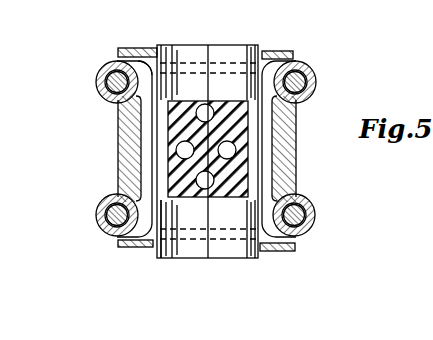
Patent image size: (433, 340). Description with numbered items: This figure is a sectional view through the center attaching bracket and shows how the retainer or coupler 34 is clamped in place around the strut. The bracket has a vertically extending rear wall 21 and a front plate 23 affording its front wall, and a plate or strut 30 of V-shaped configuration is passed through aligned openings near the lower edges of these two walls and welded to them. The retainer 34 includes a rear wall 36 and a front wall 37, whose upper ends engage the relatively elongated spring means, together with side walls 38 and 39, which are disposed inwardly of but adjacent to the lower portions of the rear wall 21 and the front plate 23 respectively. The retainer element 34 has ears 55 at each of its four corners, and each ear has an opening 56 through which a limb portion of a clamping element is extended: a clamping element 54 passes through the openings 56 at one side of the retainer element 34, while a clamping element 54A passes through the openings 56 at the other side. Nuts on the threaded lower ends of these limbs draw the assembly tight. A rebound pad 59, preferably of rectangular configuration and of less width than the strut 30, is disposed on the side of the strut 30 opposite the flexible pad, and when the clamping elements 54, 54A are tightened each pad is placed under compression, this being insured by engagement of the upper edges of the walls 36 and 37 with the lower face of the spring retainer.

The rear wall 21 is at (270, 51).
The front plate 23 is at (277, 252).
The plate or strut 30 is at (189, 78).
The retainer or coupler 34 is at (191, 149).
The rear wall 36 is at (296, 161).
The front wall 37 is at (118, 146).
The side wall 38 is at (149, 69).
The side wall 39 is at (163, 259).
The clamping element 54 is at (100, 84).
The clamping element 54A is at (312, 80).
The ear 55 is at (103, 65).
The opening 56 is at (108, 98).
The pad 59 is at (207, 197).